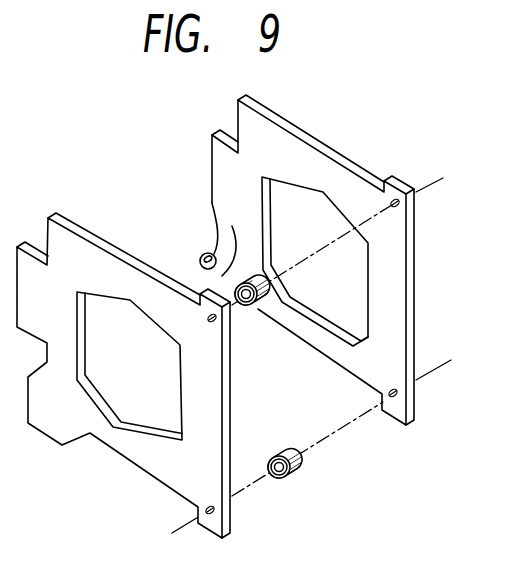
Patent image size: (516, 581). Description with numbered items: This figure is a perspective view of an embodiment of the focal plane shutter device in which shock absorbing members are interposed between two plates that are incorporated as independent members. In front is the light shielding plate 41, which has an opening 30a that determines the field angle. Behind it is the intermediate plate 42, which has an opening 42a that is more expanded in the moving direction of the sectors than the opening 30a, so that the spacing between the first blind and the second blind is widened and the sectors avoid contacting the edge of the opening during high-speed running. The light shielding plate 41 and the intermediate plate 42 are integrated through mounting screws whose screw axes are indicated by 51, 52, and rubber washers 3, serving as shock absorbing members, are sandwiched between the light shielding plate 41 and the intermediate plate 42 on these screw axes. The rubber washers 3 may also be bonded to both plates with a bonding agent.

The rubber washer 3 is at (266, 318).
The opening 30a is at (130, 405).
The light shielding plate 41 is at (143, 453).
The intermediate plate 42 is at (396, 313).
The opening 42a is at (298, 199).
The screw axis 51 is at (441, 368).
The screw axis 52 is at (438, 178).